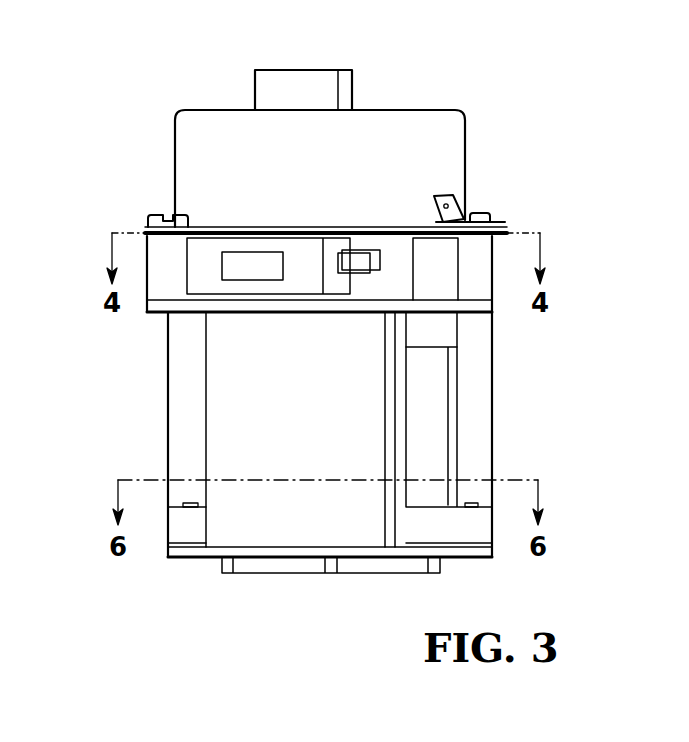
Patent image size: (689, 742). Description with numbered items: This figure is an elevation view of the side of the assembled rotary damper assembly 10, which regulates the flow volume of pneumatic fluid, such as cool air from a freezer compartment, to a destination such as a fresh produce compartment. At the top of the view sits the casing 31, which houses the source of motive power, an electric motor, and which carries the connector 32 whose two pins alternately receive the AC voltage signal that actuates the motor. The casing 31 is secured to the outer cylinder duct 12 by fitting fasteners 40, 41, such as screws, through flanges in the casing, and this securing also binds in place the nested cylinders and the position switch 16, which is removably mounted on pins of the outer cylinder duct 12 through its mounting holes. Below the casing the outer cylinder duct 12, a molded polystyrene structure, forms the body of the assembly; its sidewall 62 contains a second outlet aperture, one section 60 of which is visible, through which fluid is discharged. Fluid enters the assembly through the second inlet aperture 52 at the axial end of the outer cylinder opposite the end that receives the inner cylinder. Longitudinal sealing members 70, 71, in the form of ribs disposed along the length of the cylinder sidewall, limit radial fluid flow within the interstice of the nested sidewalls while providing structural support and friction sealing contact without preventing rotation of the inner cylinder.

The rotary damper assembly 10 is at (307, 338).
The outer cylinder duct 12 is at (243, 402).
The position switch 16 is at (208, 255).
The casing 31 is at (222, 127).
The connector 32 is at (297, 80).
The fastener 40 is at (165, 215).
The fastener 41 is at (482, 213).
The second inlet aperture 52 is at (310, 576).
The second outlet aperture section 60 is at (430, 402).
The sidewall 62 is at (185, 450).
The longitudinal sealing member 70 is at (400, 392).
The longitudinal sealing member 71 is at (477, 372).